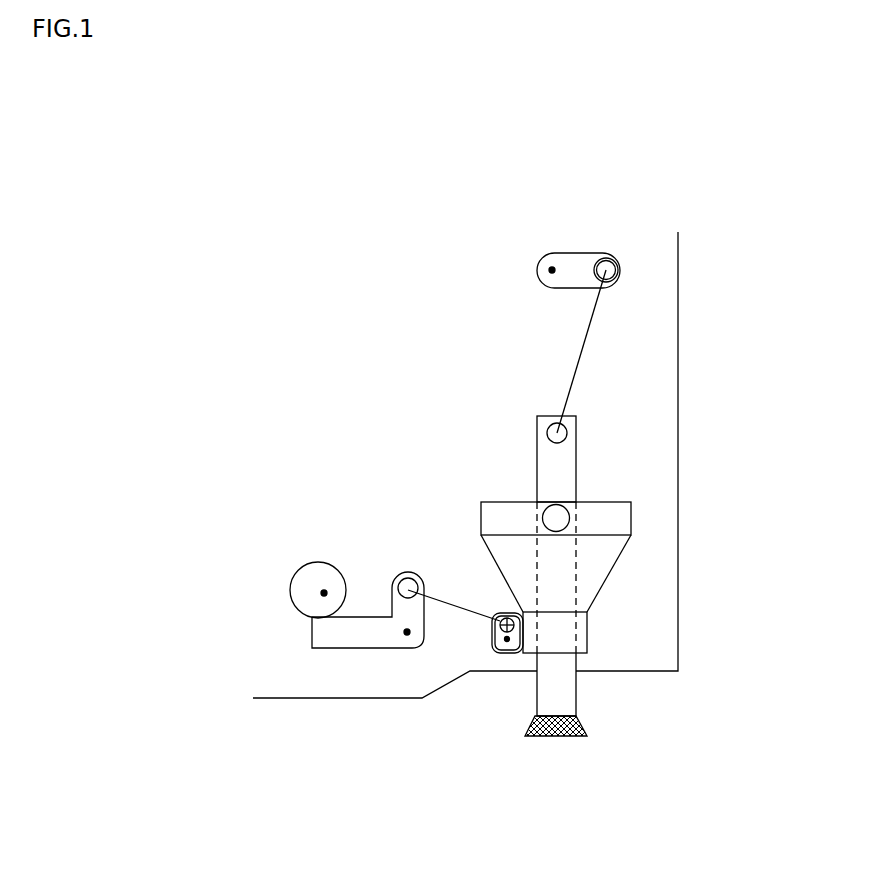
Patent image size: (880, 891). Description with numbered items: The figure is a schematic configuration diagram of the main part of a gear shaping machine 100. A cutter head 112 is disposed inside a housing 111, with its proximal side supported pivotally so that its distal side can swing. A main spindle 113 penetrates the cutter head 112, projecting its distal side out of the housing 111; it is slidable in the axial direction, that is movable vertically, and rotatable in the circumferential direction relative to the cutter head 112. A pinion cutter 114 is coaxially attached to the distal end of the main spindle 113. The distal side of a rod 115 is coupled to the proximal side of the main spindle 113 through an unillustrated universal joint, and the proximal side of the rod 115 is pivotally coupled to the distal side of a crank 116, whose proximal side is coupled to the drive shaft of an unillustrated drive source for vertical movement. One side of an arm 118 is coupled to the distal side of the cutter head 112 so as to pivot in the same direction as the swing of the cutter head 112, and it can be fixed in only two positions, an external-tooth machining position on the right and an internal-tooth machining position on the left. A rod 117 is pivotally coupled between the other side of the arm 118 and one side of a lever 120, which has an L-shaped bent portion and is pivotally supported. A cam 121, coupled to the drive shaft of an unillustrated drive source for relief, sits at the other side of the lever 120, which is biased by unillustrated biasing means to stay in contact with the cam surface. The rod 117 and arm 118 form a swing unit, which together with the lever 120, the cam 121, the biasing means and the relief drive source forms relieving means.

The gear shaping machine 100 is at (634, 768).
The housing 111 is at (678, 343).
The cutter head 112 is at (623, 520).
The main spindle 113 is at (563, 698).
The pinion cutter 114 is at (532, 736).
The rod 115 is at (583, 353).
The crank 116 is at (580, 253).
The rod 117 is at (445, 607).
The arm 118 is at (502, 652).
The lever 120 is at (348, 648).
The cam 121 is at (293, 607).